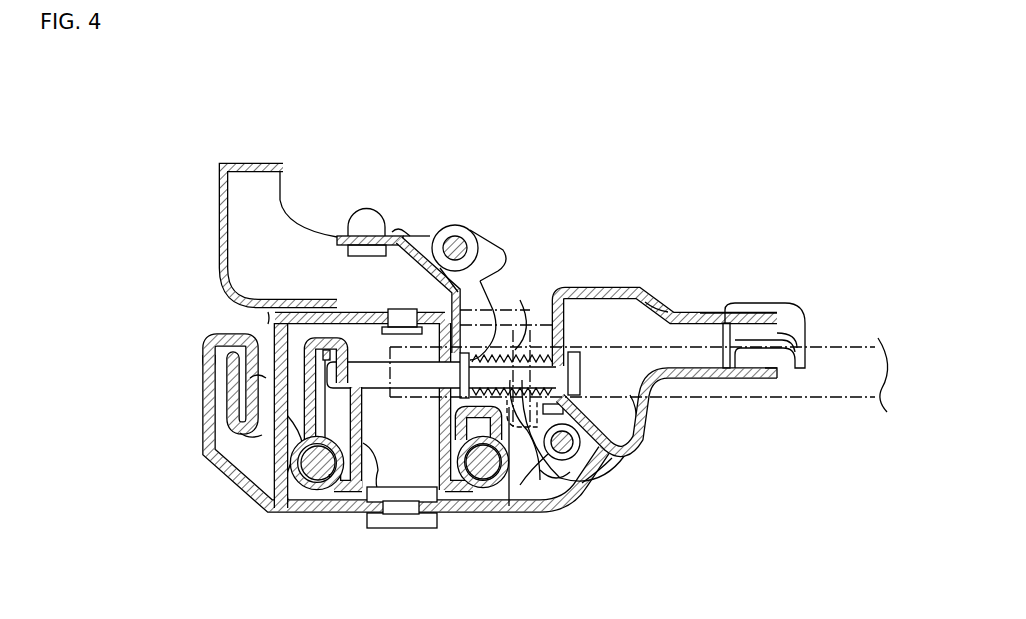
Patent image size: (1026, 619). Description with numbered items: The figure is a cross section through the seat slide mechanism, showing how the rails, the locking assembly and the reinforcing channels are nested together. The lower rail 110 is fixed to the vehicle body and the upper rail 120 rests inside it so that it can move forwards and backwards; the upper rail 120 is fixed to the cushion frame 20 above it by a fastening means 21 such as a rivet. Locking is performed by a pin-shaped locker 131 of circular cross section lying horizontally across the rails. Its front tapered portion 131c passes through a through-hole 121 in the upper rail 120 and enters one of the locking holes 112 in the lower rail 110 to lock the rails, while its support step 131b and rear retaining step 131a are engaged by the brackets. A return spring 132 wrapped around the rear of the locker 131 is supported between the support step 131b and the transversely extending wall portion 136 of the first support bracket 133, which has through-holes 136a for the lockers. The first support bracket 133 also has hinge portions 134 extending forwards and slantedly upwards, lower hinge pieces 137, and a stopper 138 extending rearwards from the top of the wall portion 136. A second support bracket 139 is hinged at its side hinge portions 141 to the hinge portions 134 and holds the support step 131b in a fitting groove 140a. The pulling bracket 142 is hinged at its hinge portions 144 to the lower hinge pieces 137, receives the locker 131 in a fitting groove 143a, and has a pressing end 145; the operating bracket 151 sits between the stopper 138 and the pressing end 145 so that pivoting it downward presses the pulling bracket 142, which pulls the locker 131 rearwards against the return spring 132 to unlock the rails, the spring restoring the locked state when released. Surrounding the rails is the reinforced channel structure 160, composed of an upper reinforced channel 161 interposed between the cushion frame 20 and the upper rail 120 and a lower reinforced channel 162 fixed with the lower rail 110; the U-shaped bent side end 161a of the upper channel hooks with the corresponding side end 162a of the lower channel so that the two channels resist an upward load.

The cushion frame 20 is at (218, 222).
The fastening means 21 is at (400, 262).
The lower rail 110 is at (281, 500).
The locking holes 112 is at (295, 444).
The upper rail 120 is at (374, 500).
The through-holes 121 is at (410, 310).
The locker 131 is at (497, 366).
The retaining step 131a is at (672, 394).
The support step 131b is at (418, 500).
The tapered portion 131c is at (335, 358).
The return spring 132 is at (512, 328).
The first support bracket 133 is at (500, 256).
The hinge portions 134 is at (478, 232).
The transversely extending wall portion 136 is at (553, 318).
The through-holes 136a is at (552, 477).
The lower hinge pieces 137 is at (600, 462).
The stopper 138 is at (745, 314).
The second support bracket 139 is at (403, 228).
The fitting grooves 140a is at (511, 470).
The side hinge portions 141 is at (438, 228).
The pulling bracket 142 is at (668, 388).
The fitting grooves 143a is at (664, 300).
The hinge portions 144 is at (583, 446).
The pressing end 145 is at (742, 379).
The operating bracket 151 is at (790, 333).
The reinforced channel structure 160 is at (159, 341).
The upper reinforced channel 161 is at (258, 318).
The side end 161a is at (250, 437).
The lower reinforced channel 162 is at (198, 328).
The second seal lip 162a is at (265, 378).